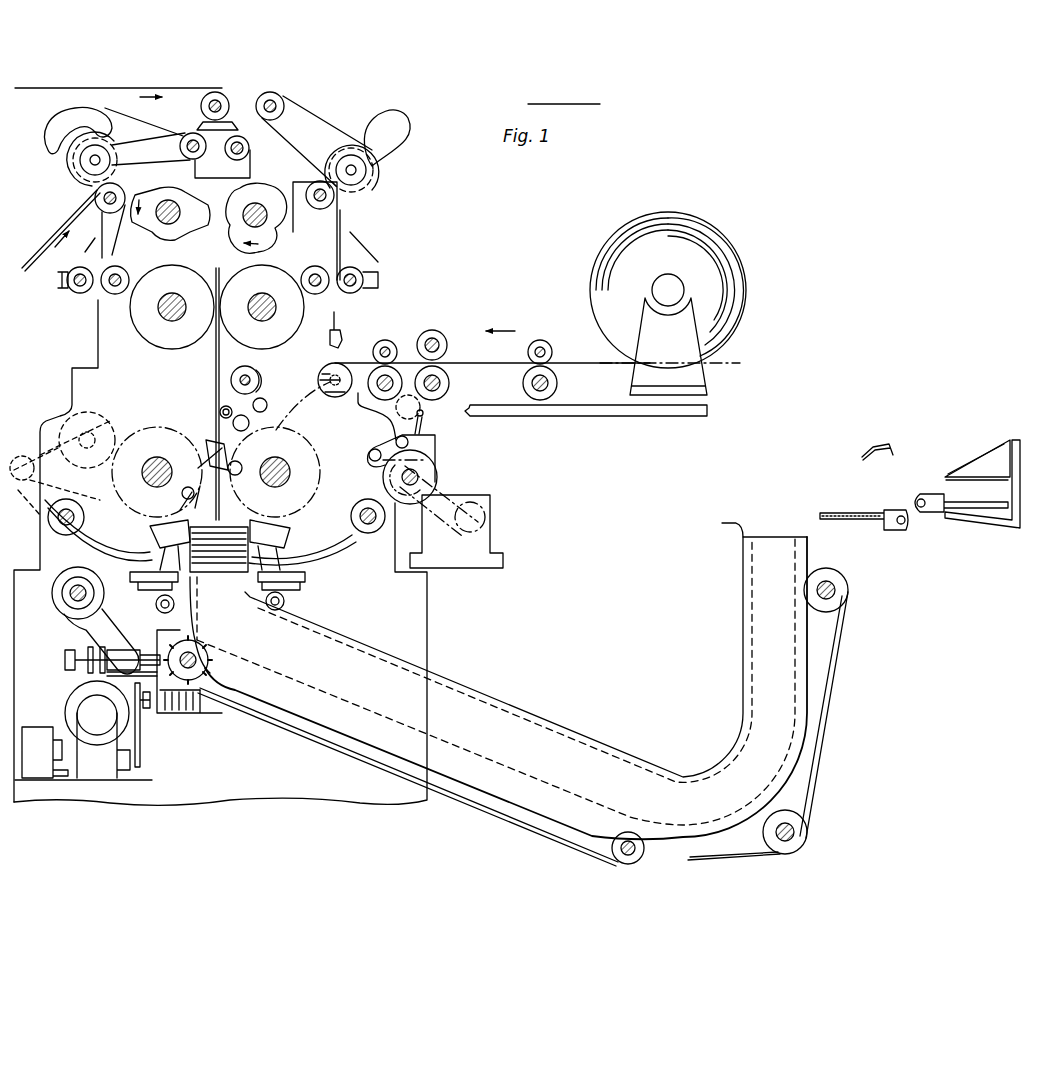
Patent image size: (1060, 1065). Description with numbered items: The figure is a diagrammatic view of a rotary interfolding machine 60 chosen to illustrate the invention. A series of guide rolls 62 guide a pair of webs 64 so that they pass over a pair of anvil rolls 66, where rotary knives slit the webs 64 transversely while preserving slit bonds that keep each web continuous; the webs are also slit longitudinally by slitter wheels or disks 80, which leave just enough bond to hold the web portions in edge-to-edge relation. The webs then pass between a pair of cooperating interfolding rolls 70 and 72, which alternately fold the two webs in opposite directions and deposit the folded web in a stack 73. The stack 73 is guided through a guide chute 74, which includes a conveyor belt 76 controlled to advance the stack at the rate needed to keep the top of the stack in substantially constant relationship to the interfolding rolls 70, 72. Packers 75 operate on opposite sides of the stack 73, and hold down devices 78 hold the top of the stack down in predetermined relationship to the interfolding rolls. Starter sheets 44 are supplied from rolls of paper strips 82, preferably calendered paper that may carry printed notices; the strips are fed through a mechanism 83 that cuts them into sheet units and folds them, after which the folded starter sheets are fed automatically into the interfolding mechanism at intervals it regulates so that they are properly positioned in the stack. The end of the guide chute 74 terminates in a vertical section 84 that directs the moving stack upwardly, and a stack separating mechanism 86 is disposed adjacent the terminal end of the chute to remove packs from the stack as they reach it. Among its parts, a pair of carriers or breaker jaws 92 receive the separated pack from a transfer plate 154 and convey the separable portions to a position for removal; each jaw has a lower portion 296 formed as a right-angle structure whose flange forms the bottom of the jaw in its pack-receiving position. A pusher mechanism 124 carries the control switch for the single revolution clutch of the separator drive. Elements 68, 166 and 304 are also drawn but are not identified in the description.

The starter sheets 44 is at (232, 580).
The rotary interfolding machine 60 is at (84, 326).
The guide rolls 62 is at (126, 266).
The webs 64 is at (50, 91).
The anvil rolls 66 is at (163, 342).
The cam 68 is at (236, 208).
The interfolding roll 70 is at (152, 426).
The interfolding roll 72 is at (312, 436).
The stack 73 is at (146, 560).
The guide chute 74 is at (497, 690).
The packers 75 is at (134, 548).
The conveyor belt 76 is at (474, 804).
The hold down devices 78 is at (175, 526).
The slitter wheels or disks 80 is at (80, 164).
The rolls of paper strips 82 is at (744, 268).
The cutting and folding mechanism 83 is at (405, 335).
The vertical section 84 is at (743, 635).
The stack separating mechanism 86 is at (791, 507).
The carriers or breaker jaws 92 is at (1000, 436).
The pusher mechanism 124 is at (870, 449).
The transfer plate 154 is at (930, 518).
The toothed bar 166 is at (854, 510).
The lower portion of breaker jaw 296 is at (1000, 526).
The plate edge 304 is at (970, 458).